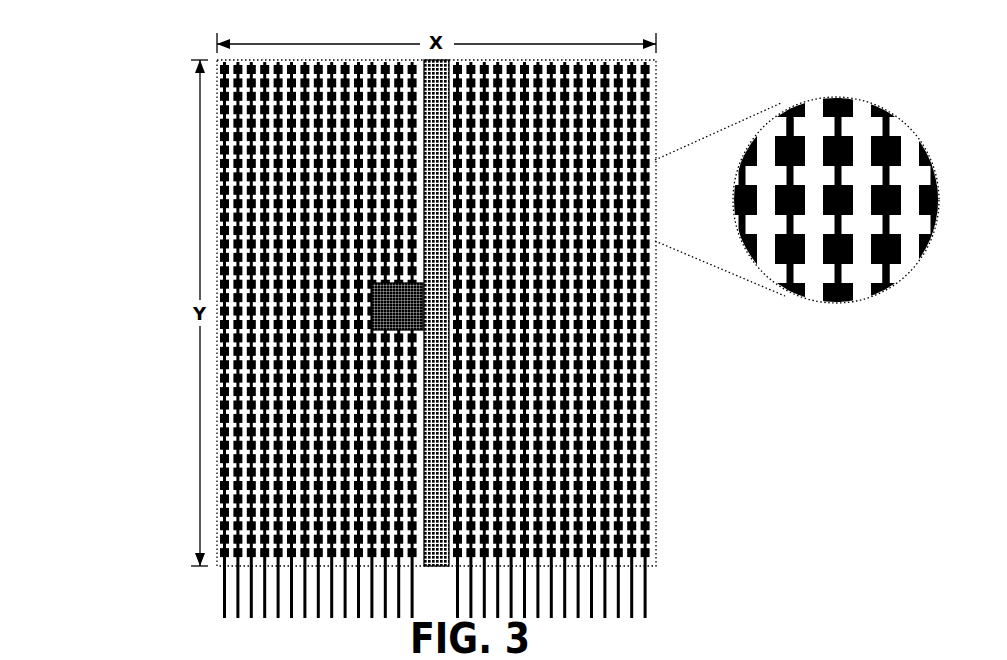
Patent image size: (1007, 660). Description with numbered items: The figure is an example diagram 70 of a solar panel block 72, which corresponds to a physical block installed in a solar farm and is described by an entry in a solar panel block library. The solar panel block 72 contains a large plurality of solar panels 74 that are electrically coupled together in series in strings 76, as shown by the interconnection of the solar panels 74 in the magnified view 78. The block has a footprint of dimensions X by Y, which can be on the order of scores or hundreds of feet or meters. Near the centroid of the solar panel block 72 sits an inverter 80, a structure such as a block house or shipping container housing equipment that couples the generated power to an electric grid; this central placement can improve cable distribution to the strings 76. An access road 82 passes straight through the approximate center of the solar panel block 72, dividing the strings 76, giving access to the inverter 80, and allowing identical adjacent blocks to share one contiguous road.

The diagram 70 is at (110, 68).
The solar panel block 72 is at (648, 440).
The solar panels 74 is at (887, 128).
The strings 76 is at (780, 118).
The magnified view 78 is at (783, 87).
The inverter 80 is at (401, 306).
The access road 82 is at (428, 558).